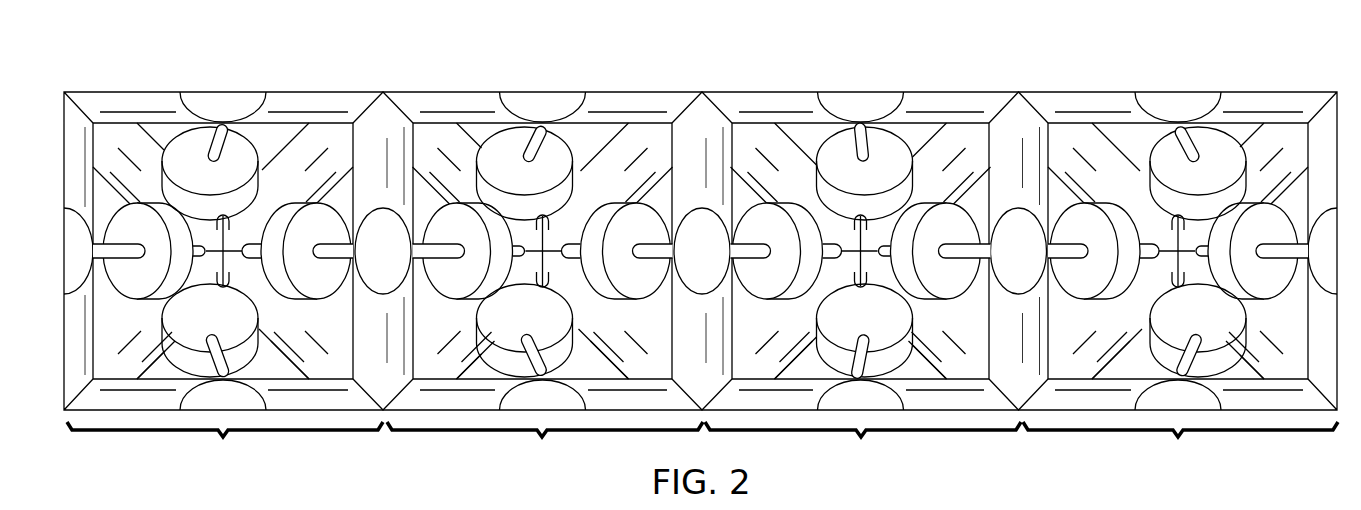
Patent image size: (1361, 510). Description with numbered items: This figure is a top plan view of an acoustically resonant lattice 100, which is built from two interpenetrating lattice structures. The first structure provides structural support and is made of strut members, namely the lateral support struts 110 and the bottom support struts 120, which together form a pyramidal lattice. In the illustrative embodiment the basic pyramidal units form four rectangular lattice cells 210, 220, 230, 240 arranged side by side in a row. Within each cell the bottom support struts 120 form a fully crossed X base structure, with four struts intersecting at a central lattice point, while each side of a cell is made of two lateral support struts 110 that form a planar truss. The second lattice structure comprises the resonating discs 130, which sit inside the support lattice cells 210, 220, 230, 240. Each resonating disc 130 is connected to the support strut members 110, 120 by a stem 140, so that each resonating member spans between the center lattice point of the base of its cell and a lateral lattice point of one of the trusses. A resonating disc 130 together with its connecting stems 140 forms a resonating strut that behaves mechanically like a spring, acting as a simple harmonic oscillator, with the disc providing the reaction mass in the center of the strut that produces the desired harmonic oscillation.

The lattice 100 is at (701, 237).
The lateral support struts 110 is at (150, 86).
The bottom support struts 120 is at (762, 125).
The resonating discs 130 is at (498, 145).
The stems 140 is at (652, 243).
The rectangular lattice cell 210 is at (225, 297).
The rectangular lattice cell 220 is at (545, 257).
The rectangular lattice cell 230 is at (863, 254).
The rectangular lattice cell 240 is at (1180, 297).